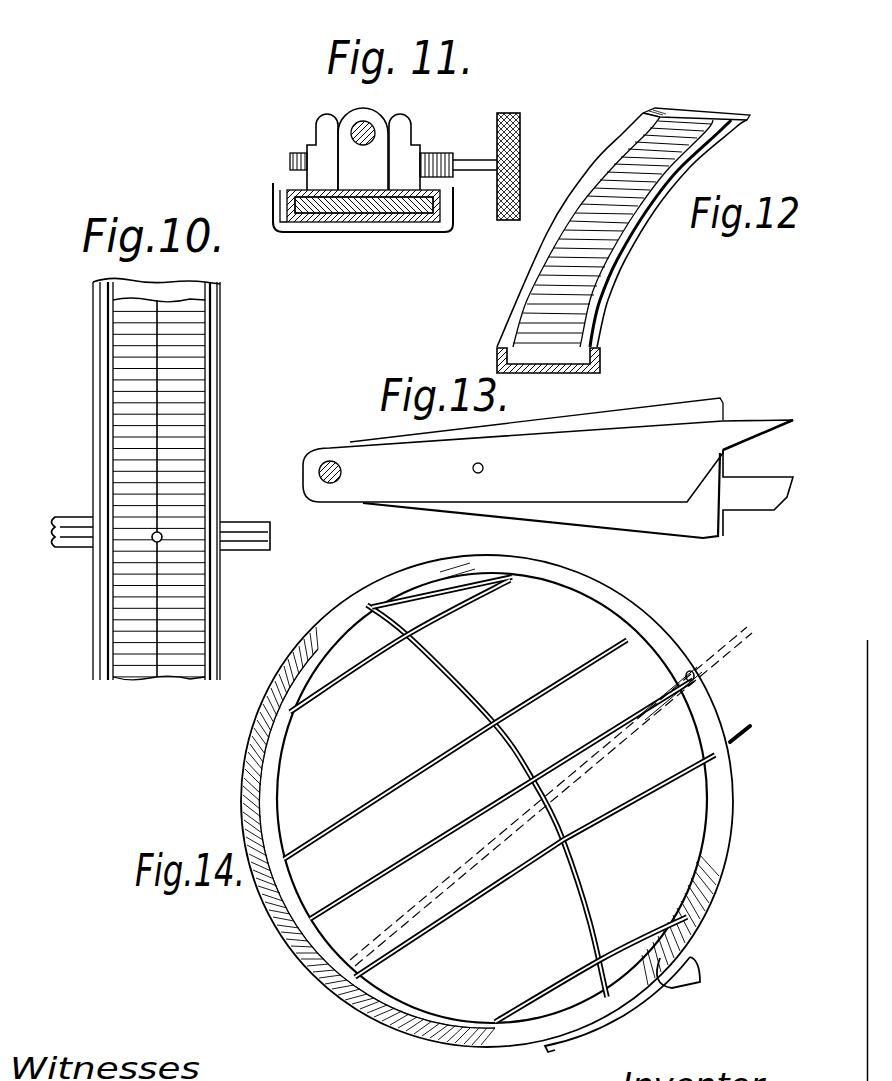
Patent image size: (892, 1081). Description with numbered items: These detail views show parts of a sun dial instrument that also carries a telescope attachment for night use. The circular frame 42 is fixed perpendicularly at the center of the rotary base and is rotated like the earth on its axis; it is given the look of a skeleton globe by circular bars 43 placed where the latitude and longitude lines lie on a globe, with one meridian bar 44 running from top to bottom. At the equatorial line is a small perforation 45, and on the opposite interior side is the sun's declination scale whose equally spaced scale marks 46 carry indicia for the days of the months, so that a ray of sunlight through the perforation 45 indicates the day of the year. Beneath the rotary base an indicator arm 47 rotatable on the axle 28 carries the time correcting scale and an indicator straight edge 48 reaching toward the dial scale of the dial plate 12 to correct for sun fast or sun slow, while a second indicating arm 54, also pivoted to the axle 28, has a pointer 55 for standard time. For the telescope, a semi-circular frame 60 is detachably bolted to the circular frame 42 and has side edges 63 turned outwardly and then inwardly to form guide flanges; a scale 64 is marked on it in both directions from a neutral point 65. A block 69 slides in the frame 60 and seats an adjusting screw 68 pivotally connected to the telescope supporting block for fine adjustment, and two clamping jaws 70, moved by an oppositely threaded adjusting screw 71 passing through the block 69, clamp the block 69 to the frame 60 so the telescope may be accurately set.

In FIG. 12, the dial plate 12 is at (590, 339).
In FIG. 13, the axle 28 is at (333, 462).
In FIG. 10, the circular frame 42 is at (222, 601).
In FIG. 14, the circular frame 42 is at (668, 962).
In FIG. 10, the circular bars 43 is at (240, 524).
In FIG. 14, the circular bars 43 is at (541, 992).
In FIG. 14, the circular bar 44 is at (578, 873).
In FIG. 14, the perforation 45 is at (695, 676).
In FIG. 10, the scale marks 46 is at (186, 393).
In FIG. 14, the scale marks 46 is at (272, 805).
In FIG. 13, the indicator arm 47 is at (660, 415).
In FIG. 13, the indicator straight edge 48 is at (765, 478).
In FIG. 13, the second indicating arm 54 is at (548, 461).
In FIG. 13, the pointer 55 is at (770, 425).
In FIG. 11, the semi-circular frame 60 is at (380, 226).
In FIG. 12, the semi-circular frame 60 is at (549, 365).
In FIG. 12, the side edges 63 is at (509, 332).
In FIG. 12, the scale 64 is at (598, 265).
In FIG. 11, the neutral point 65 is at (440, 205).
In FIG. 12, the neutral point 65 is at (612, 236).
In FIG. 11, the adjusting screw 68 is at (370, 124).
In FIG. 11, the block 69 is at (363, 149).
In FIG. 11, the clamping jaws 70 is at (418, 120).
In FIG. 11, the adjusting screw 71 is at (464, 163).